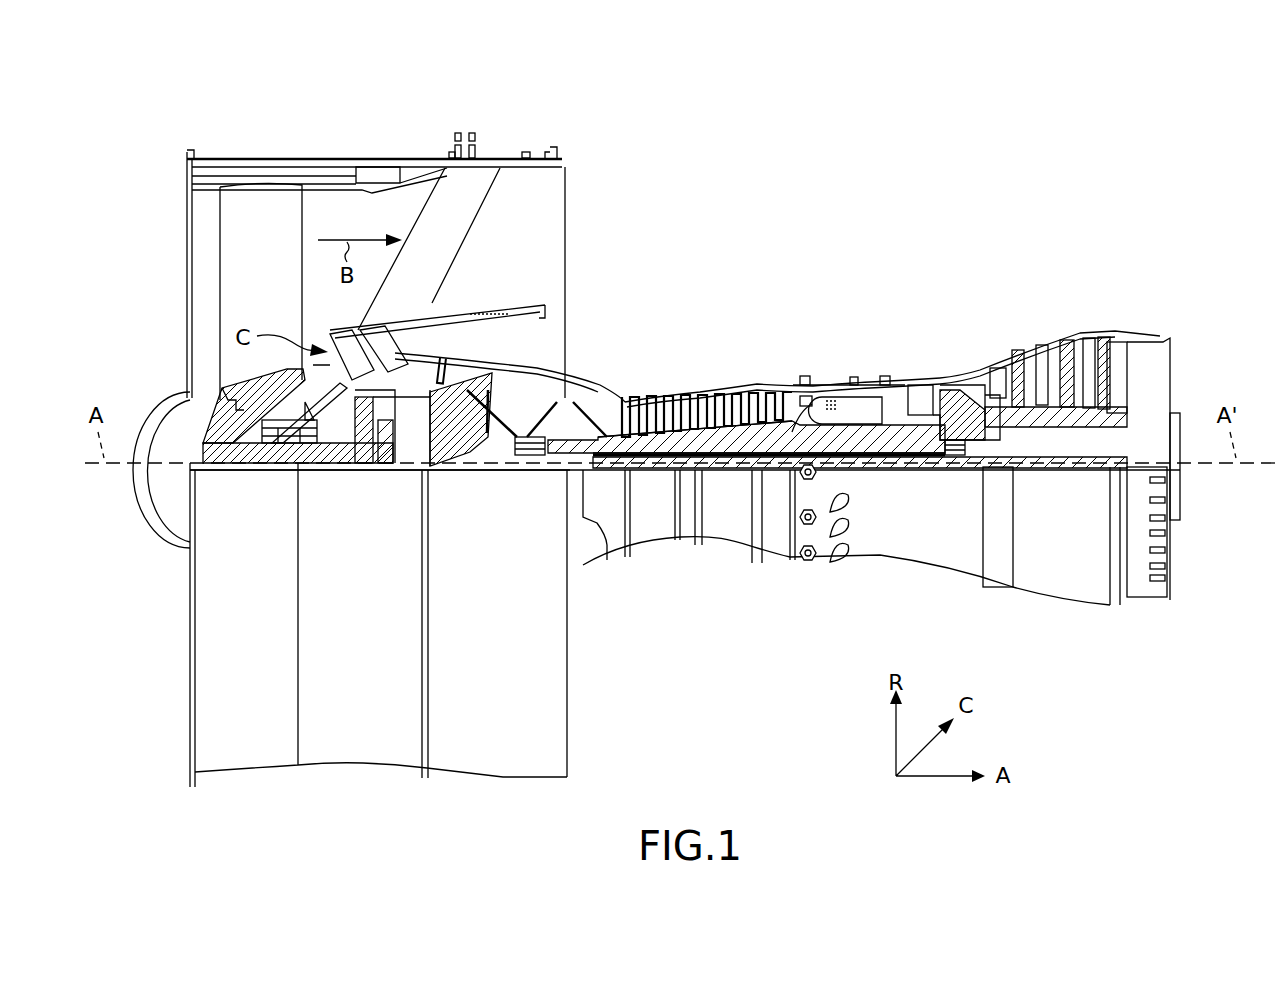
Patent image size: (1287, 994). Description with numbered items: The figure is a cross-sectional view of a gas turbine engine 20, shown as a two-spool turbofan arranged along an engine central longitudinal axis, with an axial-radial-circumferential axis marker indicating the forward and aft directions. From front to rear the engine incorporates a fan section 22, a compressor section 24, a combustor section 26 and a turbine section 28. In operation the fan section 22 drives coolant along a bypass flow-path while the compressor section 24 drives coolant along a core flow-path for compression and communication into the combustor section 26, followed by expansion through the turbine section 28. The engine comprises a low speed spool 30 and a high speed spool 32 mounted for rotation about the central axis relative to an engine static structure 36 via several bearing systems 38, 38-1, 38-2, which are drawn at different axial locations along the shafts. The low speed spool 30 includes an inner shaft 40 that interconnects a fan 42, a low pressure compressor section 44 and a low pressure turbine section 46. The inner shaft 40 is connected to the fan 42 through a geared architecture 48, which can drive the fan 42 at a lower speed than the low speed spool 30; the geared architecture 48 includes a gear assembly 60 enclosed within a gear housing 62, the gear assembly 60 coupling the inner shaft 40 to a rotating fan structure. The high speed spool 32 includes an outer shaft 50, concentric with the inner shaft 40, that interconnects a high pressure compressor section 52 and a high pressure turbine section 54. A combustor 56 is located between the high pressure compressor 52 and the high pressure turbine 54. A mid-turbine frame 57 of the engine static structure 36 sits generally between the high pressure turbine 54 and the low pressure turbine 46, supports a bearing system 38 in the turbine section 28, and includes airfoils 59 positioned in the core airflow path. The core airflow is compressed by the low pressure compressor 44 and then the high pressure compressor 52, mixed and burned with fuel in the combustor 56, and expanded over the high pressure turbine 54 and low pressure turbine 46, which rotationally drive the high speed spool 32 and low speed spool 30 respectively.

The gas turbine engine 20 is at (893, 199).
The fan section 22 is at (418, 137).
The compressor section 24 is at (430, 267).
The combustor section 26 is at (795, 267).
The turbine section 28 is at (1110, 267).
The low speed spool 30 is at (735, 484).
The high speed spool 32 is at (770, 435).
The engine static structure 36 is at (357, 748).
The bearing system 38 is at (960, 467).
The bearing system 38-1 is at (276, 443).
The bearing system 38-2 is at (520, 456).
The inner shaft 40 is at (608, 553).
The fan 42 is at (246, 284).
The low pressure compressor section 44 is at (498, 368).
The low pressure turbine section 46 is at (1048, 348).
The geared architecture 48 is at (386, 491).
The outer shaft 50 is at (854, 458).
The high pressure compressor section 52 is at (714, 433).
The high pressure turbine section 54 is at (918, 385).
The combustor 56 is at (845, 400).
The mid-turbine frame 57 is at (960, 393).
The airfoils 59 is at (967, 390).
The gear assembly 60 is at (392, 450).
The gear housing 62 is at (392, 422).